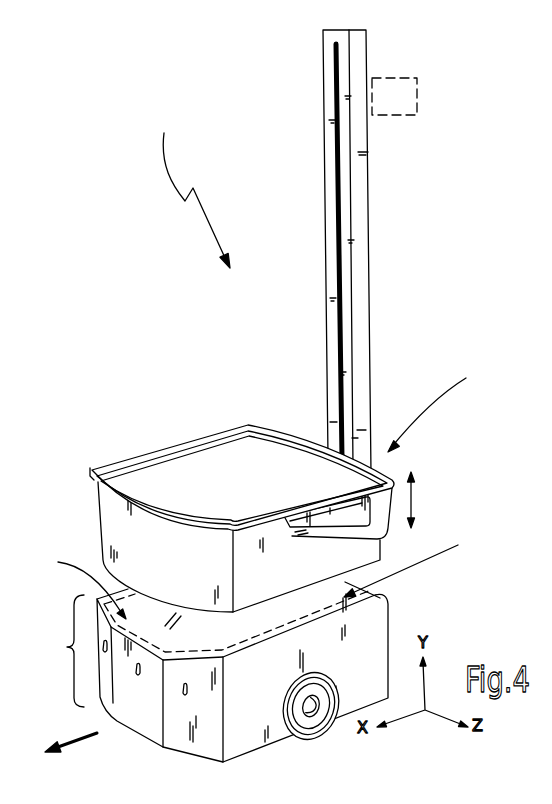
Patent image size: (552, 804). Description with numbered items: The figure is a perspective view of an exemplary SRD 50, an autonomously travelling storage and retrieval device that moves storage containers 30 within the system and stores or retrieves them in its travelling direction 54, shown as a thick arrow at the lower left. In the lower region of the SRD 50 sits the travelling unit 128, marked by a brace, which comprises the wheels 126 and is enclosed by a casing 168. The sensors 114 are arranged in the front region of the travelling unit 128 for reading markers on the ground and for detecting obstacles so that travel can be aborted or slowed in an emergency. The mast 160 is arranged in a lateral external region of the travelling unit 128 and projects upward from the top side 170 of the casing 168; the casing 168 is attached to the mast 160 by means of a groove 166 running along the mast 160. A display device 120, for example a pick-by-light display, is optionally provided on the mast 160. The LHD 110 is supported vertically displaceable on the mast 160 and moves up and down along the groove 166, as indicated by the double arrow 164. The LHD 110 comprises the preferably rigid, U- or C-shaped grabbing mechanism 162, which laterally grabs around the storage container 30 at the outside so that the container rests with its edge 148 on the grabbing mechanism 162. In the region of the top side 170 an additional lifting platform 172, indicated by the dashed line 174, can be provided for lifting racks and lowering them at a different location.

The SRD 50 is at (195, 188).
The groove 166 is at (337, 84).
The display device 120 is at (390, 77).
The mast 160 is at (337, 251).
The LHD 110 is at (443, 402).
The double arrow 164 is at (414, 500).
The edge 148 is at (128, 458).
The storage container 30 is at (216, 514).
The grabbing mechanism 162 is at (297, 531).
The top side 170 is at (77, 584).
The lifting platform 172 is at (417, 564).
The casing 168 is at (286, 672).
The dashed line 174 is at (237, 648).
The sensors 114 is at (107, 653).
The wheels 126 is at (311, 740).
The travelling unit 128 is at (60, 651).
The travelling direction 54 is at (100, 741).